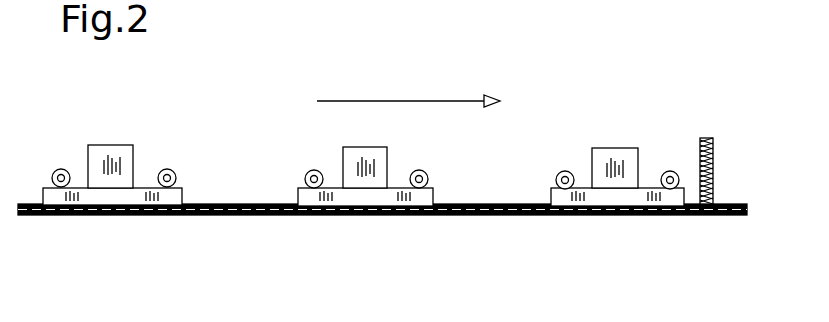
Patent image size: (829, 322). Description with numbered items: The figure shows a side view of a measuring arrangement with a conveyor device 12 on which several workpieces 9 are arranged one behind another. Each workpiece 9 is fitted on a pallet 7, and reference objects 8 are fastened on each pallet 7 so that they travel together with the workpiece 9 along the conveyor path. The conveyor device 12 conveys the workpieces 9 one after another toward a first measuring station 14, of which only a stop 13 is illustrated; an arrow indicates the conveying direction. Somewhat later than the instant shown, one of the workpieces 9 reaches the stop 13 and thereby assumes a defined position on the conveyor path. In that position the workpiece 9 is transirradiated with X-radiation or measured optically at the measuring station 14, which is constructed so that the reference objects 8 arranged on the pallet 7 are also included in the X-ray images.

The pallet 7 is at (107, 198).
The reference objects 8 is at (58, 168).
The workpiece 9 is at (120, 155).
The conveyor device 12 is at (272, 220).
The stop 13 is at (714, 178).
The first measuring station 14 is at (613, 113).